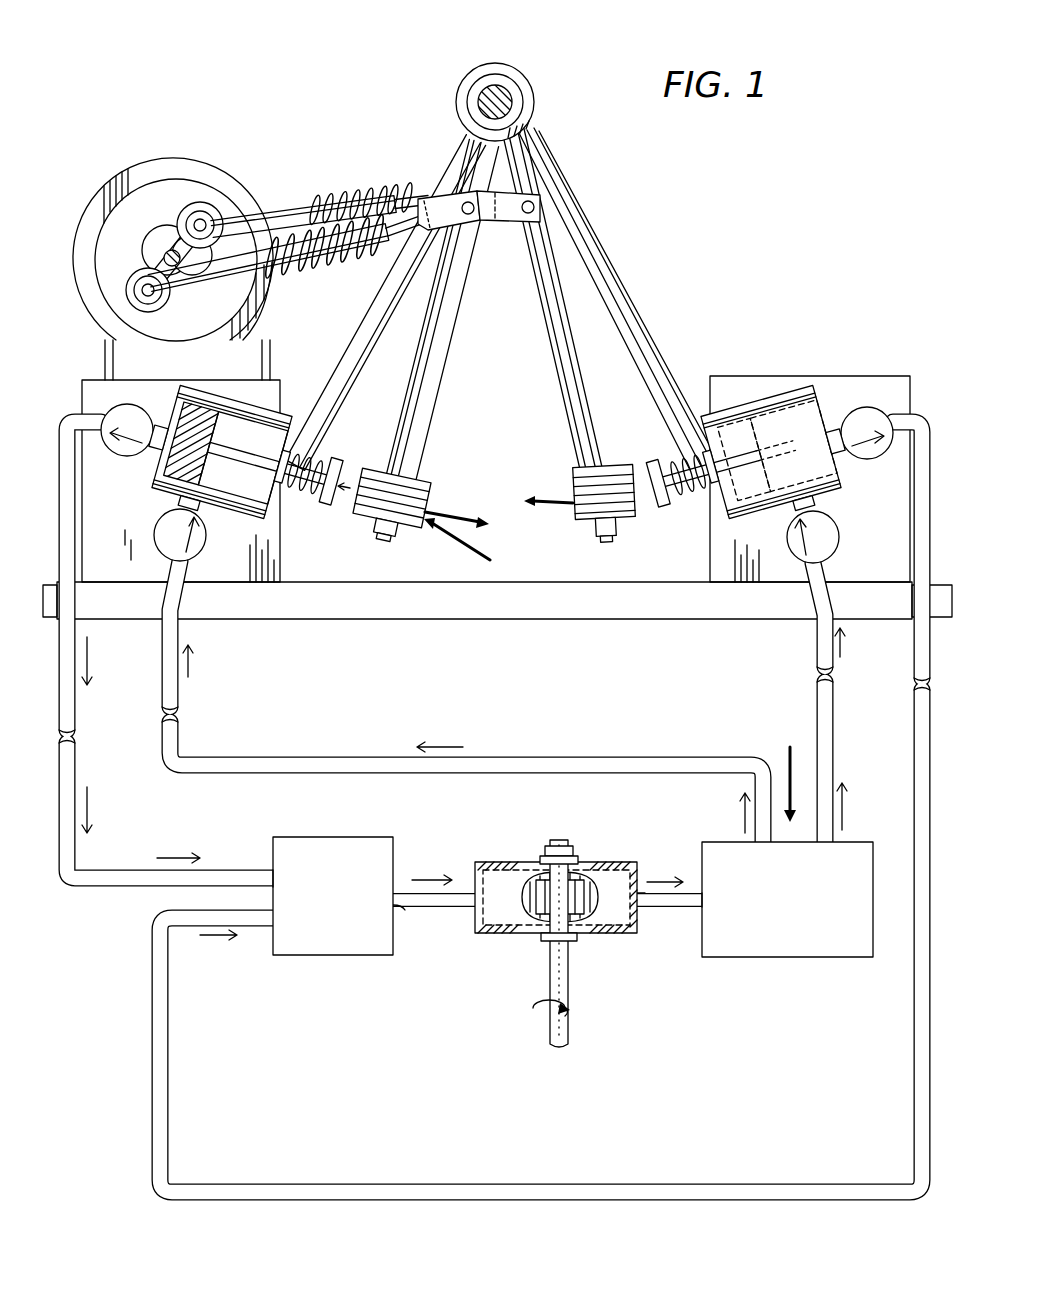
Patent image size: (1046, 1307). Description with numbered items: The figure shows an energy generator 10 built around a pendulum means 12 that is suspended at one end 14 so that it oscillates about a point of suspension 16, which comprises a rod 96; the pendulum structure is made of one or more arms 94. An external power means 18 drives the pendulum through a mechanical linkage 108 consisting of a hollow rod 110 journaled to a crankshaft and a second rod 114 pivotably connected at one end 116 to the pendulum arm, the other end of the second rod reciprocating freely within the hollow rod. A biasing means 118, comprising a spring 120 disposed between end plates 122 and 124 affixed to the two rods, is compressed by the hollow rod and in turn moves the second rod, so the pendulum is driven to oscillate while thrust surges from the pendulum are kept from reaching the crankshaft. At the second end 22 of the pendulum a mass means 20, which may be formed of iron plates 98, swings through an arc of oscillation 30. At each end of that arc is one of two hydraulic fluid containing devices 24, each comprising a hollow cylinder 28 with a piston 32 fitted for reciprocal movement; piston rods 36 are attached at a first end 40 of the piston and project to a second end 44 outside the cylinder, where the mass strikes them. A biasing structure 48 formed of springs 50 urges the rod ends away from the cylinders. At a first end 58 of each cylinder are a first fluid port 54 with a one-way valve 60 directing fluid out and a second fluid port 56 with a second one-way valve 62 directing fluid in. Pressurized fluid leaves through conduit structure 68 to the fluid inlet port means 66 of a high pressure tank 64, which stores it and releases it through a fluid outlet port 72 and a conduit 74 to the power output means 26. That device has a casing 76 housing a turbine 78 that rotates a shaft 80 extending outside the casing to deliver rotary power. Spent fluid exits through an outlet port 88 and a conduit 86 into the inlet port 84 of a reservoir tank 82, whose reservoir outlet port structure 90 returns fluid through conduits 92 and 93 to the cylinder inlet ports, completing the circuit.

The energy generator 10 is at (668, 278).
The pendulum means 12 is at (501, 311).
The one end 14 is at (483, 70).
The point of suspension 16 is at (436, 73).
The external power means 18 is at (163, 147).
The mass means 20 is at (578, 526).
The second end 22 is at (369, 535).
The hydraulic fluid containing devices 24 is at (257, 520).
The power output means 26 is at (574, 923).
The hollow cylinder 28 is at (197, 462).
The arc of oscillation 30 is at (460, 511).
The piston 32 is at (243, 440).
The piston rods 36 is at (340, 442).
The first end 40 is at (273, 518).
The second end 44 is at (352, 461).
The biasing structure 48 is at (300, 435).
The springs 50 is at (317, 446).
The first fluid port 54 is at (170, 397).
The second fluid port 56 is at (200, 506).
The first end 58 is at (197, 492).
The one-way valve 60 is at (112, 405).
The second one-way valve 62 is at (197, 550).
The high pressure tank 64 is at (380, 860).
The fluid inlet port means 66 is at (264, 860).
The conduit structure 68 is at (138, 885).
The fluid outlet port 72 is at (407, 910).
The conduit 74 is at (453, 900).
The casing 76 is at (613, 863).
The turbine 78 is at (593, 890).
The shaft 80 is at (573, 990).
The reservoir tank 82 is at (807, 938).
The inlet port 84 is at (713, 913).
The conduit 86 is at (677, 907).
The outlet port 88 is at (637, 890).
The reservoir outlet port structure 90 is at (789, 767).
The conduit 92 is at (717, 759).
The conduit 93 is at (827, 739).
The arms 94 is at (447, 306).
The rod 96 is at (490, 91).
The iron plates 98 is at (427, 487).
The mechanical linkage 108 is at (340, 180).
The hollow rod 110 is at (258, 214).
The second rod 114 is at (400, 204).
The one end 116 is at (453, 206).
The biasing means 118 is at (323, 278).
The spring 120 is at (305, 230).
The end plate 122 is at (257, 215).
The end plate 124 is at (362, 250).